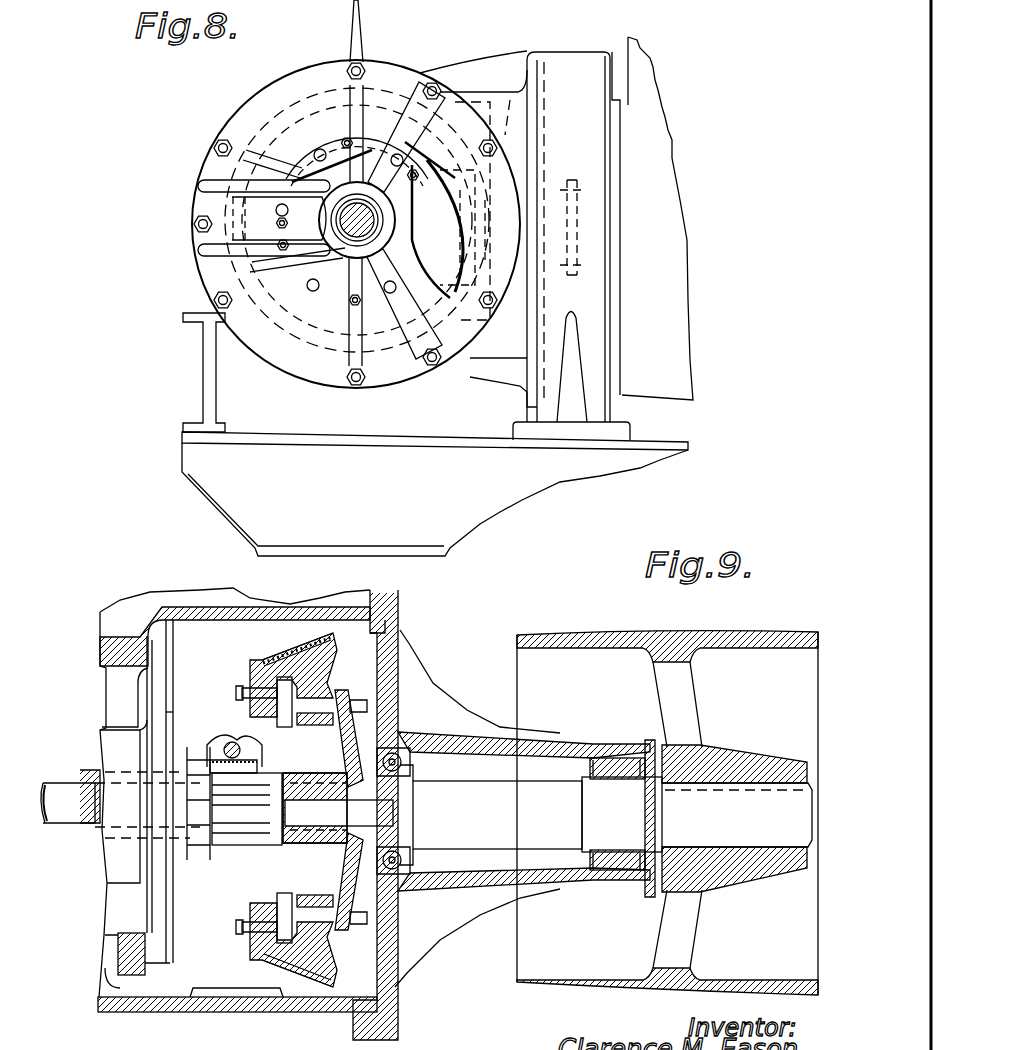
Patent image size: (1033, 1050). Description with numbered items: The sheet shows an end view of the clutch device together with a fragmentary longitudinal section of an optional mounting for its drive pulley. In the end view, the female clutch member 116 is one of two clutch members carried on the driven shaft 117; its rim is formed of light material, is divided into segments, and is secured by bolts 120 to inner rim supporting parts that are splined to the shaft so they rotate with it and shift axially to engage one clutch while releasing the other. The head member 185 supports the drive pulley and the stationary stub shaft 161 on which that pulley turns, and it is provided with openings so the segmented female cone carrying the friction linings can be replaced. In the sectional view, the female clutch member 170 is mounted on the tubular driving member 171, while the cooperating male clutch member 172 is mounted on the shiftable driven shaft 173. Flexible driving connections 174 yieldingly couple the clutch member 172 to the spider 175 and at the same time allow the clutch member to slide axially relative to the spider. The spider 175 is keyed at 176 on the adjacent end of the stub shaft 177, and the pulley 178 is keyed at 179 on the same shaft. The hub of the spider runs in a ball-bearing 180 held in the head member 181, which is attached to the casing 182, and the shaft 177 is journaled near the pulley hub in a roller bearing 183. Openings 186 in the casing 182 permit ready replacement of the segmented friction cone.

In FIG. 8, the female clutch member 116 is at (272, 152).
In FIG. 8, the driven shaft 117 is at (364, 22).
In FIG. 8, the bolts 120 is at (320, 150).
In FIG. 8, the stationary stub shaft 161 is at (342, 290).
In FIG. 8, the head member 185 is at (306, 372).
In FIG. 9, the female clutch member 170 is at (278, 664).
In FIG. 9, the tubular driving member 171 is at (300, 729).
In FIG. 9, the male clutch member 172 is at (349, 660).
In FIG. 9, the shiftable driven shaft 173 is at (275, 822).
In FIG. 9, the flexible driving connections 174 is at (260, 945).
In FIG. 9, the spider 175 is at (364, 735).
In FIG. 9, the key 176 is at (412, 788).
In FIG. 9, the stub shaft 177 is at (452, 838).
In FIG. 9, the pulley 178 is at (759, 640).
In FIG. 9, the key 179 is at (742, 785).
In FIG. 9, the ball-bearing 180 is at (400, 752).
In FIG. 9, the head member 181 is at (392, 1010).
In FIG. 9, the casing 182 is at (168, 1010).
In FIG. 9, the roller bearing 183 is at (613, 757).
In FIG. 9, the openings 186 is at (247, 1002).